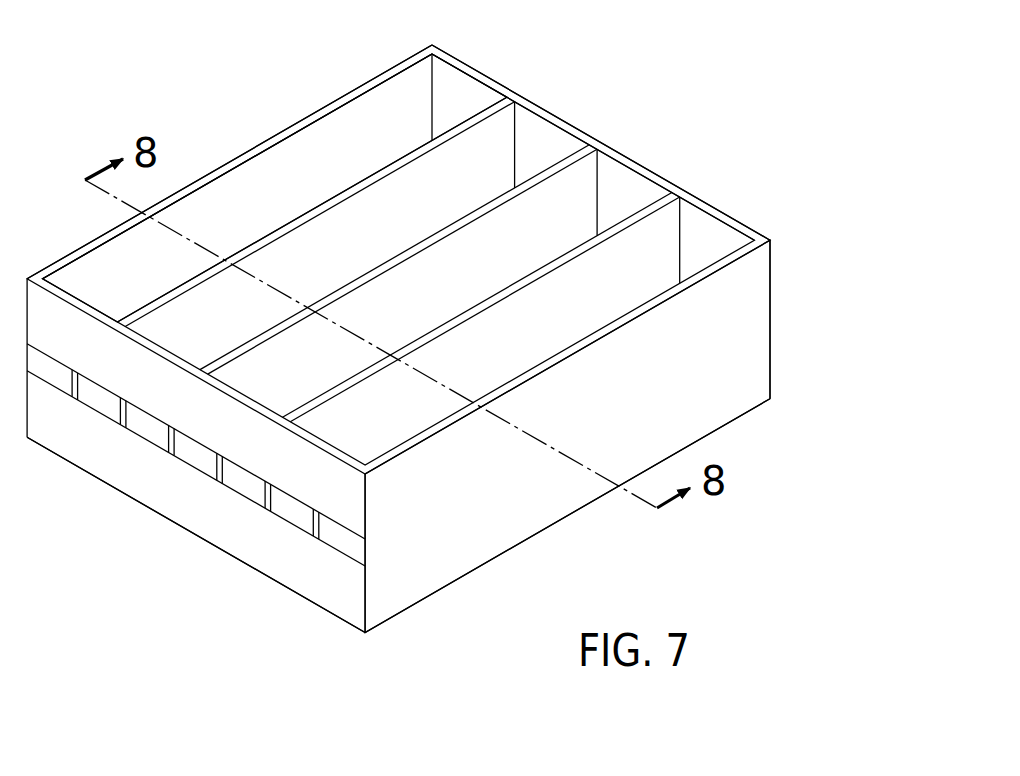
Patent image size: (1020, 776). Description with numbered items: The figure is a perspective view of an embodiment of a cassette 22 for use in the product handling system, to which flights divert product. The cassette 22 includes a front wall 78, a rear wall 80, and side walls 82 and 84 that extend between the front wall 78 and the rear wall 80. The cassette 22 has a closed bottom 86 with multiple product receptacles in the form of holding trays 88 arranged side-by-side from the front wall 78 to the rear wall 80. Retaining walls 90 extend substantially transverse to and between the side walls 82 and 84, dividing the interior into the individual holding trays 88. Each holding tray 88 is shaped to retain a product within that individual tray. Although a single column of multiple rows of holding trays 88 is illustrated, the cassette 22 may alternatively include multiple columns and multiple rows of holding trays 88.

The cassette 22 is at (398, 334).
The front wall 78 is at (732, 400).
The rear wall 80 is at (251, 148).
The side wall 82 is at (170, 487).
The side wall 84 is at (705, 200).
The closed bottom 86 is at (196, 540).
The holding tray 88 is at (398, 246).
The retaining wall 90 is at (383, 168).